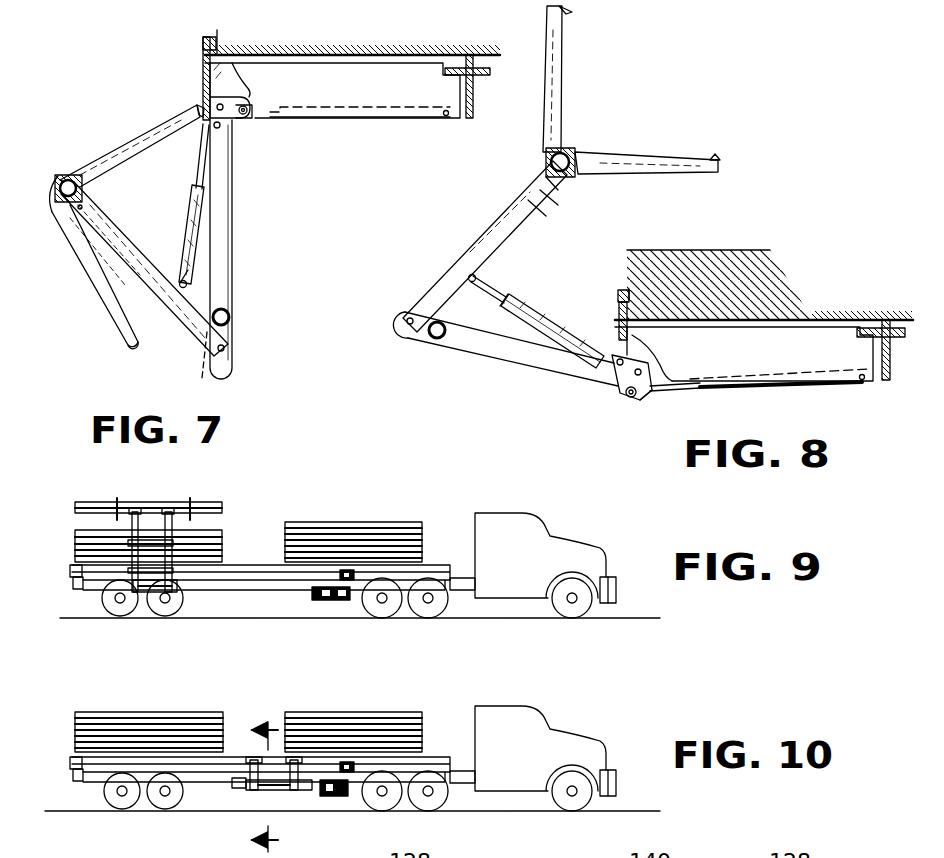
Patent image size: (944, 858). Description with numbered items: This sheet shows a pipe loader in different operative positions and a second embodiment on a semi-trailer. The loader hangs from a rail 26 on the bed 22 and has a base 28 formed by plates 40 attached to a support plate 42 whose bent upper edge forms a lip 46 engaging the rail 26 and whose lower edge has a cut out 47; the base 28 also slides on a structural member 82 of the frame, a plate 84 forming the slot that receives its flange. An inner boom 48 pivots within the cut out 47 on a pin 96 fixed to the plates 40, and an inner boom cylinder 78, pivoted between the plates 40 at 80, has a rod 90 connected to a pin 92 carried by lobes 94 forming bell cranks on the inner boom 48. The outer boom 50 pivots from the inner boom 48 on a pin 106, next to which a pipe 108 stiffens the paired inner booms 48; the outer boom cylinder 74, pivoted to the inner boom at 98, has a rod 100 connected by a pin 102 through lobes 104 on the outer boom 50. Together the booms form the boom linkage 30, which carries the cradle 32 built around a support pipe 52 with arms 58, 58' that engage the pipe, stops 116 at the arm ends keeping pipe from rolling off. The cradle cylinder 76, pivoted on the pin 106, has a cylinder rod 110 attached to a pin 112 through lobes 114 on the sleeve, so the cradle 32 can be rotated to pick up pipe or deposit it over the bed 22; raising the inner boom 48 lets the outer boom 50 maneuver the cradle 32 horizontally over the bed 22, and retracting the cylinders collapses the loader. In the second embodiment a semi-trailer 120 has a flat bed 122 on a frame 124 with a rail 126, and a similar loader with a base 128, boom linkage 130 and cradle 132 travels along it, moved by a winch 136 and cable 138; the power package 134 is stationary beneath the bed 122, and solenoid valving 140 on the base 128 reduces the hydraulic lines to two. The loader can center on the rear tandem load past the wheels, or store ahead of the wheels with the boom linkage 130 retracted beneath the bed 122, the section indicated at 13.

In FIG. 7, the flat bed 22 is at (246, 46).
In FIG. 8, the flat bed 22 is at (658, 264).
In FIG. 7, the rail 26 is at (204, 42).
In FIG. 8, the rail 26 is at (622, 290).
In FIG. 7, the base 28 is at (352, 134).
In FIG. 7, the boom linkage 30 is at (134, 353).
In FIG. 8, the boom linkage 30 is at (457, 357).
In FIG. 7, the cradle 32 is at (68, 138).
In FIG. 8, the cradle 32 is at (603, 103).
In FIG. 7, the plates 40 is at (351, 62).
In FIG. 8, the plates 40 is at (814, 326).
In FIG. 7, the support plate 42 is at (204, 52).
In FIG. 8, the support plate 42 is at (620, 306).
In FIG. 7, the lip 46 is at (208, 36).
In FIG. 8, the lip 46 is at (619, 290).
In FIG. 7, the cut out 47 is at (208, 76).
In FIG. 8, the cut out 47 is at (626, 346).
In FIG. 7, the inner boom 48 is at (233, 214).
In FIG. 8, the inner boom 48 is at (540, 368).
In FIG. 7, the outer boom 50 is at (138, 284).
In FIG. 8, the outer boom 50 is at (524, 220).
In FIG. 7, the support pipe 52 is at (62, 176).
In FIG. 8, the support pipe 52 is at (578, 155).
In FIG. 7, the arms 58 is at (130, 146).
In FIG. 8, the arms 58 is at (612, 90).
In FIG. 7, the arm 58' is at (95, 276).
In FIG. 7, the cylinder 74 is at (197, 192).
In FIG. 8, the cylinder 74 is at (566, 340).
In FIG. 7, the cylinder 76 is at (216, 365).
In FIG. 8, the cylinder 76 is at (479, 228).
In FIG. 7, the cylinder 78 is at (390, 120).
In FIG. 8, the cylinder 78 is at (732, 390).
In FIG. 7, the pivotal connection 80 is at (447, 120).
In FIG. 8, the pivotal connection 80 is at (864, 383).
In FIG. 7, the structural member 82 is at (475, 88).
In FIG. 8, the structural member 82 is at (892, 358).
In FIG. 7, the plate 84 is at (450, 66).
In FIG. 8, the plate 84 is at (872, 327).
In FIG. 7, the rod 90 is at (272, 104).
In FIG. 8, the rod 90 is at (688, 387).
In FIG. 7, the pin 92 is at (251, 113).
In FIG. 8, the pin 92 is at (636, 394).
In FIG. 7, the lobes 94 is at (246, 116).
In FIG. 8, the lobes 94 is at (628, 398).
In FIG. 7, the pin 96 is at (209, 104).
In FIG. 8, the pin 96 is at (626, 385).
In FIG. 7, the pivotal connection 98 is at (223, 132).
In FIG. 8, the pivotal connection 98 is at (616, 366).
In FIG. 7, the rod 100 is at (179, 240).
In FIG. 8, the rod 100 is at (500, 295).
In FIG. 7, the pin 102 is at (188, 283).
In FIG. 8, the pin 102 is at (472, 283).
In FIG. 7, the lobes 104 is at (185, 268).
In FIG. 8, the lobes 104 is at (498, 270).
In FIG. 7, the pin 106 is at (227, 355).
In FIG. 8, the pin 106 is at (401, 327).
In FIG. 7, the pipe 108 is at (230, 312).
In FIG. 8, the pipe 108 is at (430, 338).
In FIG. 7, the cylinder rod 110 is at (88, 200).
In FIG. 8, the cylinder rod 110 is at (535, 181).
In FIG. 7, the pin 112 is at (72, 242).
In FIG. 8, the pin 112 is at (545, 178).
In FIG. 7, the lobes 114 is at (70, 232).
In FIG. 8, the lobes 114 is at (548, 158).
In FIG. 7, the stops 116 is at (197, 118).
In FIG. 8, the stops 116 is at (566, 13).
In FIG. 9, the semi-trailer 120 is at (560, 514).
In FIG. 10, the semi-trailer 120 is at (562, 707).
In FIG. 9, the flat bed 122 is at (72, 567).
In FIG. 10, the flat bed 122 is at (72, 758).
In FIG. 9, the frame 124 is at (80, 590).
In FIG. 10, the frame 124 is at (85, 784).
In FIG. 9, the rail 126 is at (72, 580).
In FIG. 10, the rail 126 is at (72, 772).
In FIG. 9, the base 128 is at (190, 592).
In FIG. 10, the base 128 is at (243, 752).
In FIG. 9, the boom linkage 130 is at (192, 544).
In FIG. 10, the boom linkage 130 is at (304, 792).
In FIG. 9, the cradle 132 is at (196, 503).
In FIG. 10, the cradle 132 is at (244, 787).
In FIG. 9, the power package 134 is at (325, 605).
In FIG. 10, the power package 134 is at (352, 800).
In FIG. 9, the winch 136 is at (349, 570).
In FIG. 10, the winch 136 is at (349, 762).
In FIG. 9, the cable 138 is at (311, 542).
In FIG. 10, the cable 138 is at (312, 756).
In FIG. 9, the solenoid valving 140 is at (152, 600).
In FIG. 10, the solenoid valving 140 is at (276, 797).
In FIG. 10, the section line 13 is at (270, 776).